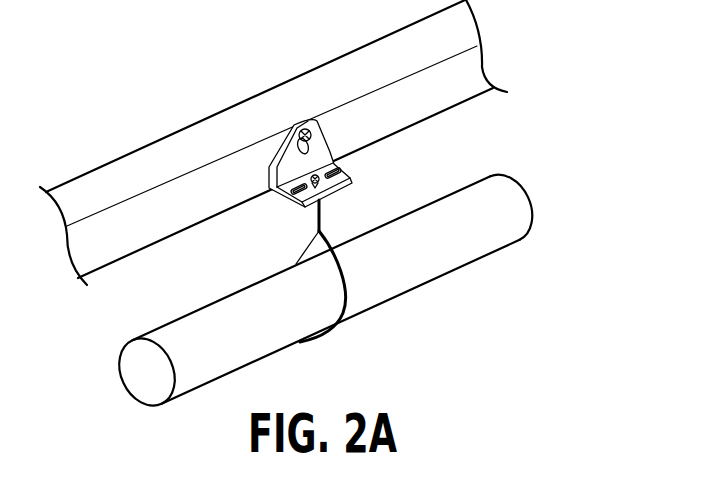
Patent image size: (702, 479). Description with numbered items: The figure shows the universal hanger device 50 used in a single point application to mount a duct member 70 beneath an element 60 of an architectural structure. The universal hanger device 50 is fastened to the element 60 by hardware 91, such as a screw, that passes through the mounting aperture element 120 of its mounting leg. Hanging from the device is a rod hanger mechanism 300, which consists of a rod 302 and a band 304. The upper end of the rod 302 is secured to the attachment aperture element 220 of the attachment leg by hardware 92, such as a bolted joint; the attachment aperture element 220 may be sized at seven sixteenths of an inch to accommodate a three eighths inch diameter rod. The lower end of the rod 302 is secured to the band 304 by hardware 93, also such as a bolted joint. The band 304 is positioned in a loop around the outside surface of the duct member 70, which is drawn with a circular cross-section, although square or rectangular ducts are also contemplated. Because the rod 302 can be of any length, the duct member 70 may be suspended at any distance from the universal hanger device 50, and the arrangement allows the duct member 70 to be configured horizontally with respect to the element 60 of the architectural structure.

The universal hanger device 50 is at (291, 117).
The element of an architectural structure 60 is at (465, 80).
The duct member 70 is at (467, 235).
The hardware 91 is at (303, 129).
The hardware 92 is at (311, 176).
The hardware 93 is at (321, 232).
The mounting aperture element 120 is at (300, 131).
The attachment aperture element 220 is at (349, 176).
The rod hanger mechanism 300 is at (298, 192).
The rod 302 is at (321, 211).
The band 304 is at (345, 298).